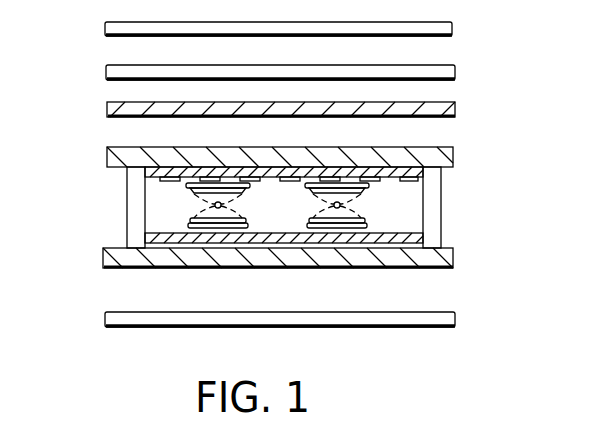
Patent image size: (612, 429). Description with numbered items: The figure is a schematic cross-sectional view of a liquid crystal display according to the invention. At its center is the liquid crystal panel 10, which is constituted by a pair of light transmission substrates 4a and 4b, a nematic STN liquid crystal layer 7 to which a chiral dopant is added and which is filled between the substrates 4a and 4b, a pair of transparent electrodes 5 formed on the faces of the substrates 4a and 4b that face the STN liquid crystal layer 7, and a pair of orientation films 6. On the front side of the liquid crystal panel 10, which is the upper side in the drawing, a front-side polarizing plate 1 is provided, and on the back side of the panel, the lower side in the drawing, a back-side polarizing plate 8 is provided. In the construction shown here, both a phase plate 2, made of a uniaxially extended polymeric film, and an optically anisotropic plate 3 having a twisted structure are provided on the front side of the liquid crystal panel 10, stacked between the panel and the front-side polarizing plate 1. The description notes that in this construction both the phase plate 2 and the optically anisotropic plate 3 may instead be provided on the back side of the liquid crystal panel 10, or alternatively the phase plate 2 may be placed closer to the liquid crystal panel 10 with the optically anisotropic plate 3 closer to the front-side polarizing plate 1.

The front-side polarizing plate 1 is at (452, 33).
The phase plate 2 is at (455, 74).
The optically anisotropic plate 3 is at (455, 110).
The light transmission substrate 4a is at (453, 161).
The light transmission substrate 4b is at (107, 263).
The transparent electrodes 5 is at (147, 241).
The orientation films 6 is at (157, 220).
The STN liquid crystal layer 7 is at (412, 224).
The back-side polarizing plate 8 is at (455, 320).
The liquid crystal panel 10 is at (540, 130).